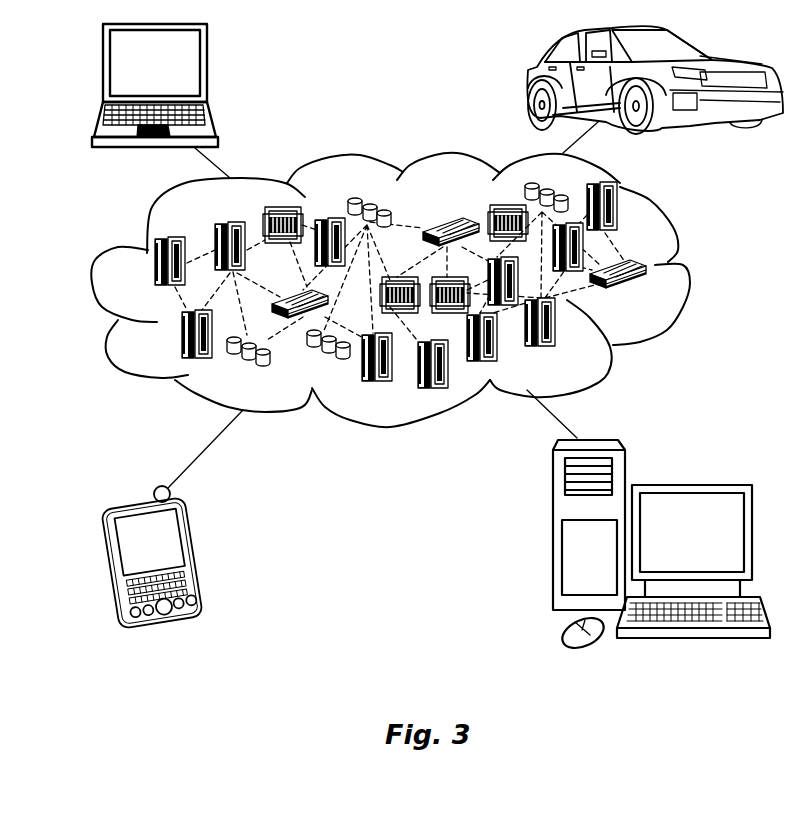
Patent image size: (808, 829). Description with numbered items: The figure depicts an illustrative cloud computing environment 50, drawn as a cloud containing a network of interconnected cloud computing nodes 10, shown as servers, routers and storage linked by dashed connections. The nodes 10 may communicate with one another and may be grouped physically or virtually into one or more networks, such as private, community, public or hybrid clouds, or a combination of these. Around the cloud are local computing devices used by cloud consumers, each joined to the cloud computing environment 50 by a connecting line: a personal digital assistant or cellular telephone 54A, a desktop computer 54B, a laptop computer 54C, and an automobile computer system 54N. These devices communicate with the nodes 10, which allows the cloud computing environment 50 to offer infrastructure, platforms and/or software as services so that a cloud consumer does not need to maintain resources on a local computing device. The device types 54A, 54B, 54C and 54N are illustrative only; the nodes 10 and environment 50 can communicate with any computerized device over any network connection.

The cloud computing node 10 is at (664, 301).
The cloud computing environment 50 is at (692, 272).
The personal digital assistant or cellular telephone 54A is at (200, 547).
The desktop computer 54B is at (708, 482).
The laptop computer 54C is at (207, 57).
The automobile computer system 54N is at (530, 72).